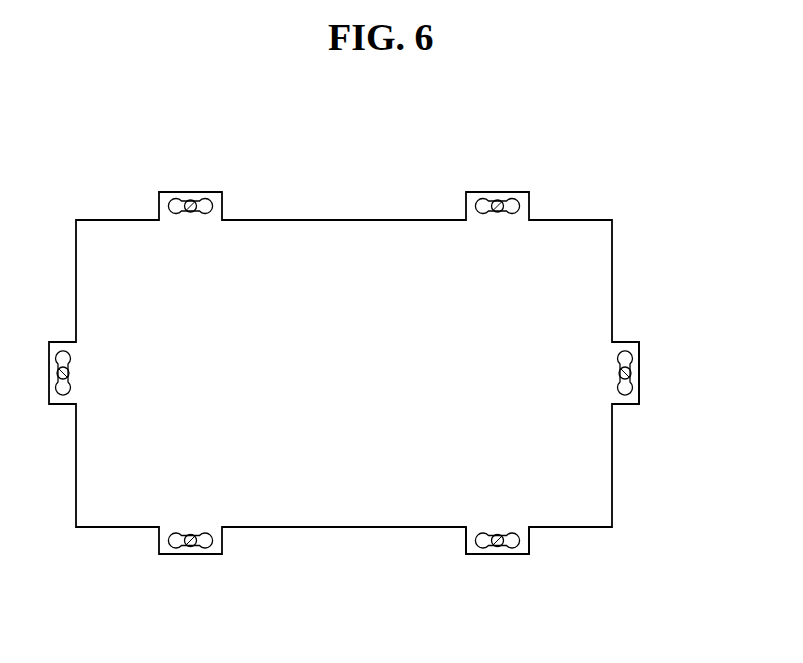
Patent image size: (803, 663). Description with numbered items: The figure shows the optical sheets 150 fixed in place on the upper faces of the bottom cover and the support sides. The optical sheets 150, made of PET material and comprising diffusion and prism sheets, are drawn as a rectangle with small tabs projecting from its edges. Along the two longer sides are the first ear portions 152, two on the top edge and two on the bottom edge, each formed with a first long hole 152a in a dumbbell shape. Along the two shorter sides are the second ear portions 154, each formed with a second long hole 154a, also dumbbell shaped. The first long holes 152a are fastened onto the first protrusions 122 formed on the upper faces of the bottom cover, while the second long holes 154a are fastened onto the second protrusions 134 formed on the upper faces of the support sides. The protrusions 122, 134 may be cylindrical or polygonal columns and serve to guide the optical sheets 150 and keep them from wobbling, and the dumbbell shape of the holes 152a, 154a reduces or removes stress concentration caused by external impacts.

The optical sheets 150 is at (347, 230).
The first ear portions 152 is at (523, 548).
The first long hole 152a is at (487, 549).
The first protrusions 122 is at (495, 547).
The second ear portions 154 is at (635, 347).
The second long hole 154a is at (633, 386).
The second protrusions 134 is at (632, 374).